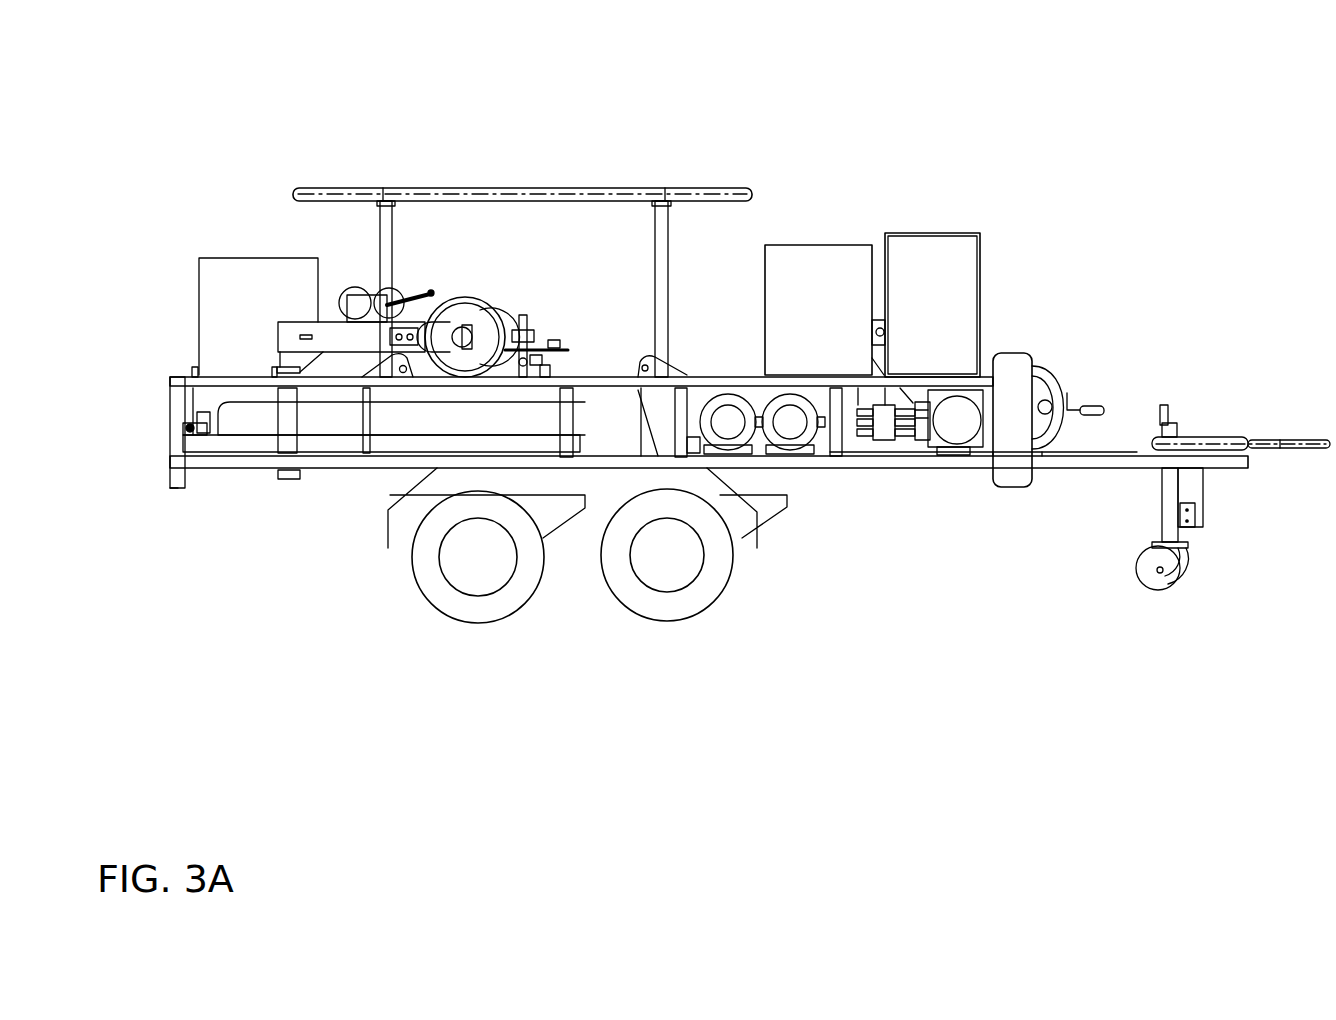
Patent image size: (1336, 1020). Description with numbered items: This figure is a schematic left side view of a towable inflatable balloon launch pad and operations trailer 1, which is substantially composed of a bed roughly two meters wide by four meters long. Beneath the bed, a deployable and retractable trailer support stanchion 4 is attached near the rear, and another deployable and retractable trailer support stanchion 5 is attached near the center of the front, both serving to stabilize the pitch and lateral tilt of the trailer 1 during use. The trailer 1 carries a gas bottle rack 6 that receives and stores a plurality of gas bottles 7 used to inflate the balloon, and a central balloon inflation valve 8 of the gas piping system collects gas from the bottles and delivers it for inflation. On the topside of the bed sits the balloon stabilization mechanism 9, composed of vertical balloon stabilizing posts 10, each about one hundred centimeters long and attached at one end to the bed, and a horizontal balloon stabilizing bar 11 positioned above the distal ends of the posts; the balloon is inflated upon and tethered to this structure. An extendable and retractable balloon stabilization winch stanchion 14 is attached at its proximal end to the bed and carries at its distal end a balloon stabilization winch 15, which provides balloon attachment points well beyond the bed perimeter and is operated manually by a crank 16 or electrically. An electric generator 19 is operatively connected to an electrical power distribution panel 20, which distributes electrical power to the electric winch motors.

The trailer 1 is at (1086, 87).
The trailer support stanchion 4 is at (285, 480).
The trailer support stanchion 5 is at (1020, 488).
The gas bottle rack 6 is at (704, 390).
The gas bottle 7 is at (730, 425).
The central balloon inflation valve 8 is at (888, 450).
The balloon stabilization mechanism 9 is at (477, 145).
The vertical balloon stabilizing post 10 is at (380, 236).
The horizontal balloon stabilizing bar 11 is at (612, 204).
The balloon stabilization winch stanchion 14 is at (337, 343).
The balloon stabilization winch 15 is at (475, 322).
The crank 16 is at (423, 288).
The electric generator 19 is at (818, 243).
The electrical power distribution panel 20 is at (940, 233).